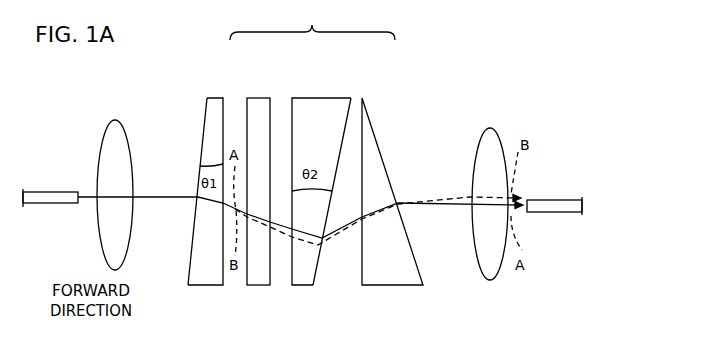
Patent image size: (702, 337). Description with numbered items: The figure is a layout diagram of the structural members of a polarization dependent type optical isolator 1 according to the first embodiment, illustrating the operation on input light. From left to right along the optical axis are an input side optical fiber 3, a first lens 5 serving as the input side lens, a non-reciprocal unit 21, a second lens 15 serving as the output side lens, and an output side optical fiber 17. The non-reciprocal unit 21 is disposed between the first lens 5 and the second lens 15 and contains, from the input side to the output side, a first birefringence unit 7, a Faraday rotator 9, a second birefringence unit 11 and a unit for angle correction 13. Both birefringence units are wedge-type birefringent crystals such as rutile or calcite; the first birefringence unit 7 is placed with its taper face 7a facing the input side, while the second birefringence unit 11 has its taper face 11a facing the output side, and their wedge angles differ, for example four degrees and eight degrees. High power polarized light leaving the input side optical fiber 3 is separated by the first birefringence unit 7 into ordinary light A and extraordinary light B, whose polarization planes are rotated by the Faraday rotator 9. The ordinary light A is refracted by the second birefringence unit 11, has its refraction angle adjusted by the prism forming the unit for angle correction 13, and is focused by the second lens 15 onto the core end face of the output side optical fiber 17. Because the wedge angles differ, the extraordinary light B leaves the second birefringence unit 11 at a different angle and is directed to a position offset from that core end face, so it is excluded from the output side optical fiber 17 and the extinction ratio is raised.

The polarization dependent type optical isolator 1 is at (440, 63).
The input side optical fiber 3 is at (43, 191).
The first lens 5 is at (116, 120).
The first birefringence unit 7 is at (224, 97).
The taper face 7a is at (189, 270).
The Faraday rotator 9 is at (259, 97).
The second birefringence unit 11 is at (317, 97).
The taper face 11a is at (315, 277).
The unit for angle correction 13 is at (369, 117).
The second lens 15 is at (490, 128).
The output side optical fiber 17 is at (553, 199).
The non-reciprocal unit 21 is at (312, 22).